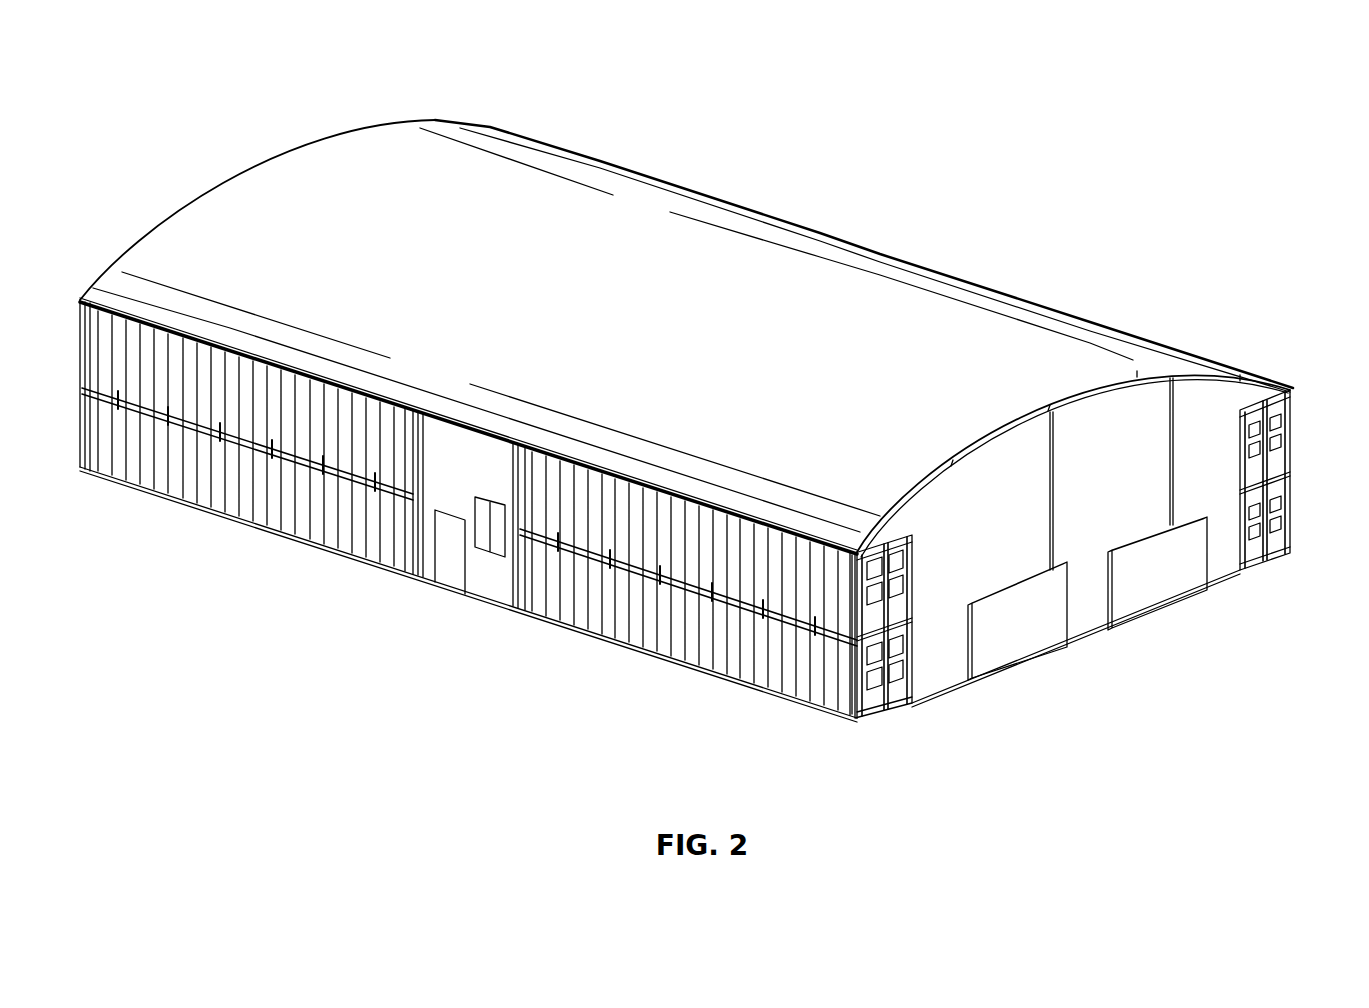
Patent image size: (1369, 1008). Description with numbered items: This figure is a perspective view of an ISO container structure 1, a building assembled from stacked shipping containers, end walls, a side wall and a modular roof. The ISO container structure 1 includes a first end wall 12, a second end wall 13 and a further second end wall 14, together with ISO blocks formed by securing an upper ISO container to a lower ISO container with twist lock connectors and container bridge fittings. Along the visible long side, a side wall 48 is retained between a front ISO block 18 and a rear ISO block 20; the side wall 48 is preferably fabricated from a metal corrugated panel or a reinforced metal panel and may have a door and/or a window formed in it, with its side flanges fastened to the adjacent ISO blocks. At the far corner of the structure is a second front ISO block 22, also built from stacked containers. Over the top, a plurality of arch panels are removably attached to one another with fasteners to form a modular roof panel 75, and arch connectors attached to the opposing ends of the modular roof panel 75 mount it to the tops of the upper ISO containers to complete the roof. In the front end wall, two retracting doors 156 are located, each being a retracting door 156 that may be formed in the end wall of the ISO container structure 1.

The ISO container structure 1 is at (907, 165).
The first end wall 12 is at (1085, 617).
The second end wall 13 is at (135, 245).
The second end wall 14 is at (965, 258).
The first front ISO block 18 is at (655, 656).
The first rear ISO block 20 is at (215, 512).
The second front ISO block 22 is at (1296, 420).
The side wall 48 is at (485, 590).
The modular roof panel 75 is at (294, 172).
The retracting door 156 is at (1027, 663).